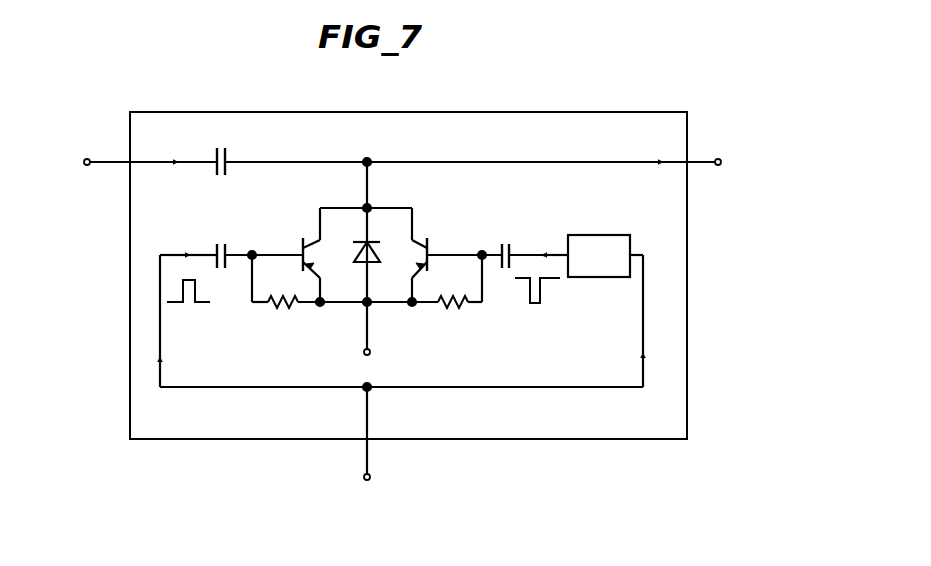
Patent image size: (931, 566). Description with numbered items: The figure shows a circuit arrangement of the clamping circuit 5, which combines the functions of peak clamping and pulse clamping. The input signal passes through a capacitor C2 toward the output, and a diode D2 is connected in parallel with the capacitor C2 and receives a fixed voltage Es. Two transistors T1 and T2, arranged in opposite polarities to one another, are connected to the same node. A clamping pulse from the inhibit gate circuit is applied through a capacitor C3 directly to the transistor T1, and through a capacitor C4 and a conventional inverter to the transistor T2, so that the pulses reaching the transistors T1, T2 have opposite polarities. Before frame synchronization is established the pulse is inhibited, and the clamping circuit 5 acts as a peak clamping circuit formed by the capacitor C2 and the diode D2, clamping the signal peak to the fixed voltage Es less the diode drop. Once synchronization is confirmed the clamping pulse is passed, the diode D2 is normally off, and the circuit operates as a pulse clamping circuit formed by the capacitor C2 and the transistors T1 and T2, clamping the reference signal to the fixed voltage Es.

The clamping circuit 5 is at (384, 112).
The capacitor C2 is at (217, 150).
The capacitor C3 is at (216, 247).
The capacitor C4 is at (501, 247).
The transistor T1 is at (302, 243).
The transistor T2 is at (430, 243).
The diode D2 is at (372, 258).
The fixed voltage Es is at (370, 351).